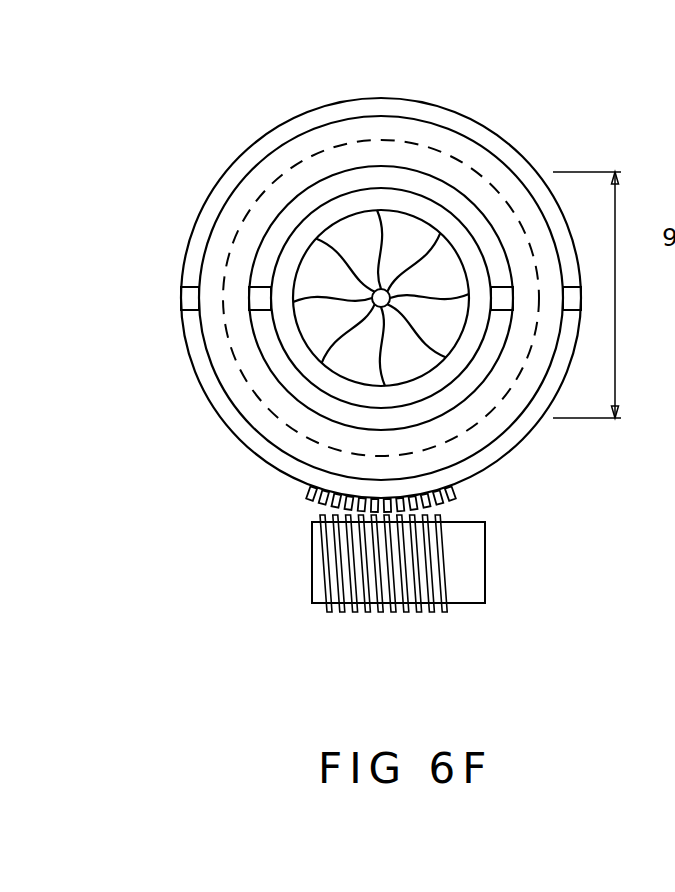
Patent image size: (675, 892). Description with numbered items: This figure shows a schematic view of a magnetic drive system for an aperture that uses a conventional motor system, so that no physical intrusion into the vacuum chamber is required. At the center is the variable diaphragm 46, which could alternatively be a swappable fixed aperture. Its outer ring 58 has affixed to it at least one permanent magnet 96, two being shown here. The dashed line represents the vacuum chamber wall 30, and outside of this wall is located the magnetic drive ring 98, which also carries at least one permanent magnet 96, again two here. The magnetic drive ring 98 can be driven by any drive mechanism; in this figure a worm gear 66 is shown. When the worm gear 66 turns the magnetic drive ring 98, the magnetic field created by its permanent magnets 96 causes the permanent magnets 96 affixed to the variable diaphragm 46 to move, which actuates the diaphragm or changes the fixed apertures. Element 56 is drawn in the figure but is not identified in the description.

The vacuum chamber wall 30 is at (297, 164).
The variable diaphragm 46 is at (612, 295).
The impeller housing 56 is at (357, 200).
The outer ring 58 is at (398, 176).
The worm gear 66 is at (313, 561).
The permanent magnet 96 is at (262, 310).
The magnetic drive ring 98 is at (202, 210).